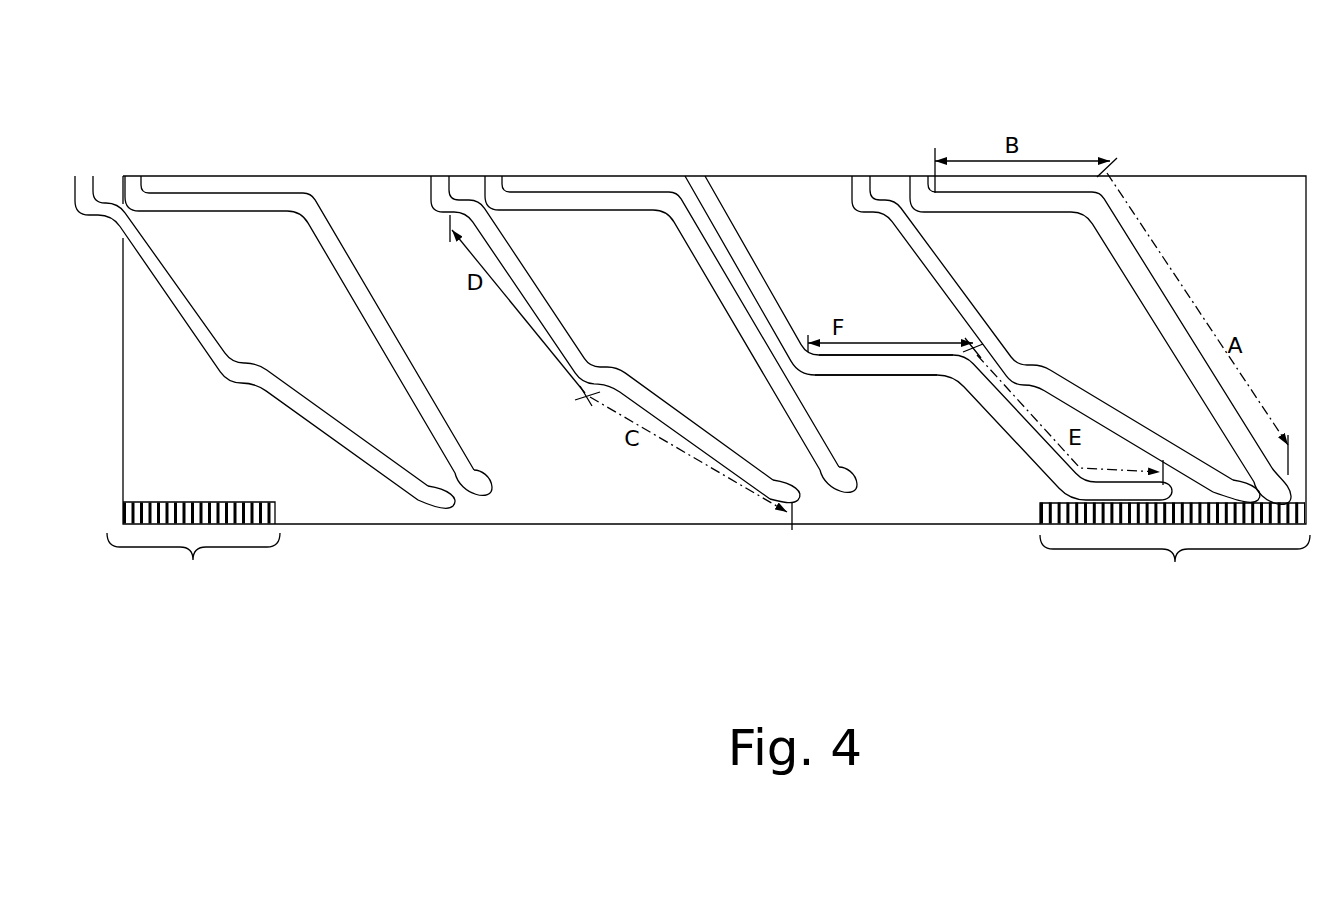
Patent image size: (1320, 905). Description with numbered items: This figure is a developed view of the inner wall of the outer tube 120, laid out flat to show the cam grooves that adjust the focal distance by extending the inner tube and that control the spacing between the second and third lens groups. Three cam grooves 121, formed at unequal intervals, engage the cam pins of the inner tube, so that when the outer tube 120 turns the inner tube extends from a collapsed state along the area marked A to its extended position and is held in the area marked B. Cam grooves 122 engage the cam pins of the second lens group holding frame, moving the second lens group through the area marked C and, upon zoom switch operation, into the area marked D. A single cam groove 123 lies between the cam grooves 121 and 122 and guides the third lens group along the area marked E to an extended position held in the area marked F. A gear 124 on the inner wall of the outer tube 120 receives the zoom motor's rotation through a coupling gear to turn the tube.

The outer tube 120 is at (772, 132).
The cam grooves 121 is at (397, 340).
The cam grooves 122 is at (326, 418).
The cam groove 123 is at (866, 356).
The gear 124 is at (708, 554).